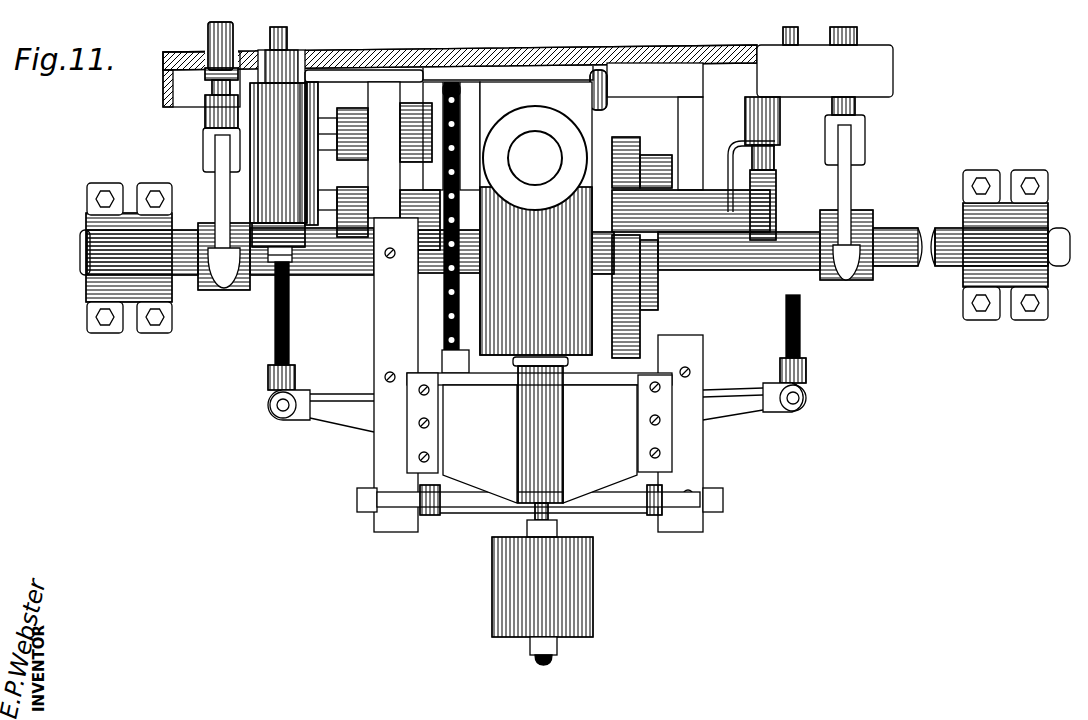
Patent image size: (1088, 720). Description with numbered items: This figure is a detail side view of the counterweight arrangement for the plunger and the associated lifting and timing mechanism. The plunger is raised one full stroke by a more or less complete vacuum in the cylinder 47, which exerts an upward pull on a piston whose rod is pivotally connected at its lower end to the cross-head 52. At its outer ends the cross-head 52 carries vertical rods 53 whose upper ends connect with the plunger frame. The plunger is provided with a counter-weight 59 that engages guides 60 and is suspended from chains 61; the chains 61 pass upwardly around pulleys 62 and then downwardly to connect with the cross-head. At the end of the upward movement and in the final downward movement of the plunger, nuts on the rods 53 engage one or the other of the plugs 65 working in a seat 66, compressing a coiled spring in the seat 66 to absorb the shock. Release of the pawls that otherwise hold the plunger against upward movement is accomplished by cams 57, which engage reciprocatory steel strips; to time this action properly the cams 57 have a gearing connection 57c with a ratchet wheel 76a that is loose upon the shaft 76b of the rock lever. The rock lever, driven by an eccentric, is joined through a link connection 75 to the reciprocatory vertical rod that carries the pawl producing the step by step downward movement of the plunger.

The cylinder 47 is at (536, 218).
The cross-head 52 is at (335, 413).
The vertical rods 53 is at (290, 335).
The cams 57 is at (762, 202).
The gearing connection 57c is at (640, 322).
The counter-weight 59 is at (539, 511).
The guides 60 is at (716, 349).
The chains 61 is at (452, 298).
The pulleys 62 is at (462, 95).
The plugs 65 is at (291, 63).
The seat 66 is at (278, 165).
The link connection 75 is at (214, 196).
The ratchet wheel 76a is at (658, 302).
The shaft 76b is at (768, 258).